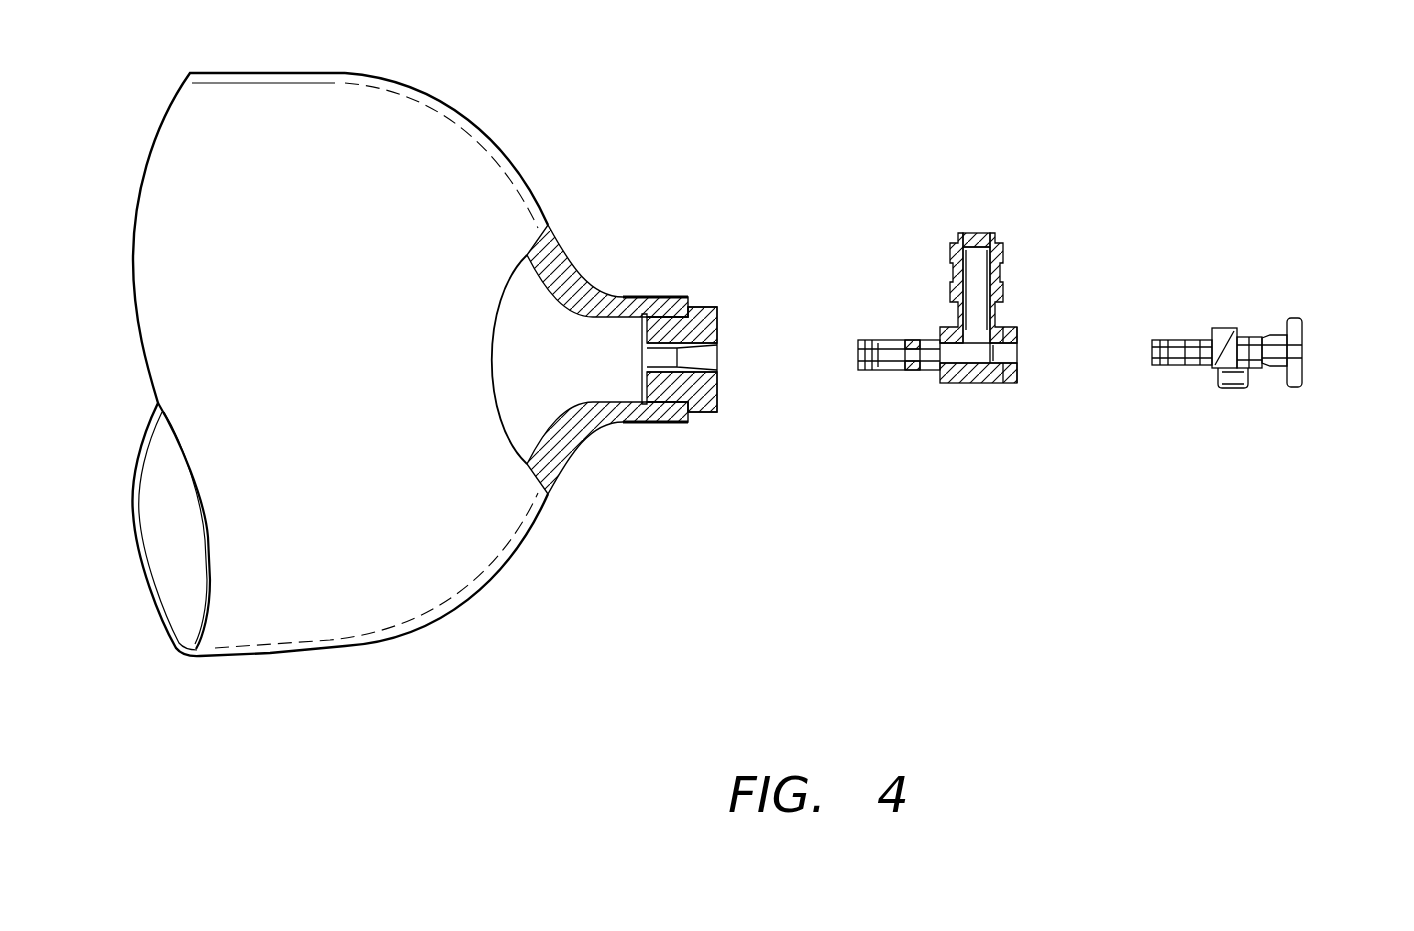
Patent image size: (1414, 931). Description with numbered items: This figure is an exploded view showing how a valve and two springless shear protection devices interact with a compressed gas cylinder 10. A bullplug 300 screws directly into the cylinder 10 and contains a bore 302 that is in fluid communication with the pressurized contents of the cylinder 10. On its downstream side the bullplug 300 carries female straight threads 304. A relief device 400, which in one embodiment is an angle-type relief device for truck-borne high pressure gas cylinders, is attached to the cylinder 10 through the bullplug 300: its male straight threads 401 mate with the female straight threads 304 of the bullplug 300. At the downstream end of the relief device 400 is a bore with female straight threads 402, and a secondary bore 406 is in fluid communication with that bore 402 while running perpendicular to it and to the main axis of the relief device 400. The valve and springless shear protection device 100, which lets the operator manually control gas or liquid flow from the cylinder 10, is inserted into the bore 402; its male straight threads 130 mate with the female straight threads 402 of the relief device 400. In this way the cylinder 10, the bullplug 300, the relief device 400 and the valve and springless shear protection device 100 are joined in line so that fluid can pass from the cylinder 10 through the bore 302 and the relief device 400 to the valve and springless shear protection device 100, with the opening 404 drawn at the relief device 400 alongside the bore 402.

The cylinder 10 is at (377, 633).
The bullplug 300 is at (721, 322).
The bore 302 is at (705, 353).
The female straight threads 304 is at (707, 372).
The relief device 400 is at (983, 290).
The male straight threads 401 is at (928, 335).
The female straight threads 402 is at (1017, 362).
The passage 404 is at (1003, 355).
The secondary bore 406 is at (980, 298).
The valve and springless shear protection device 100 is at (1274, 319).
The male straight threads 130 is at (1195, 338).